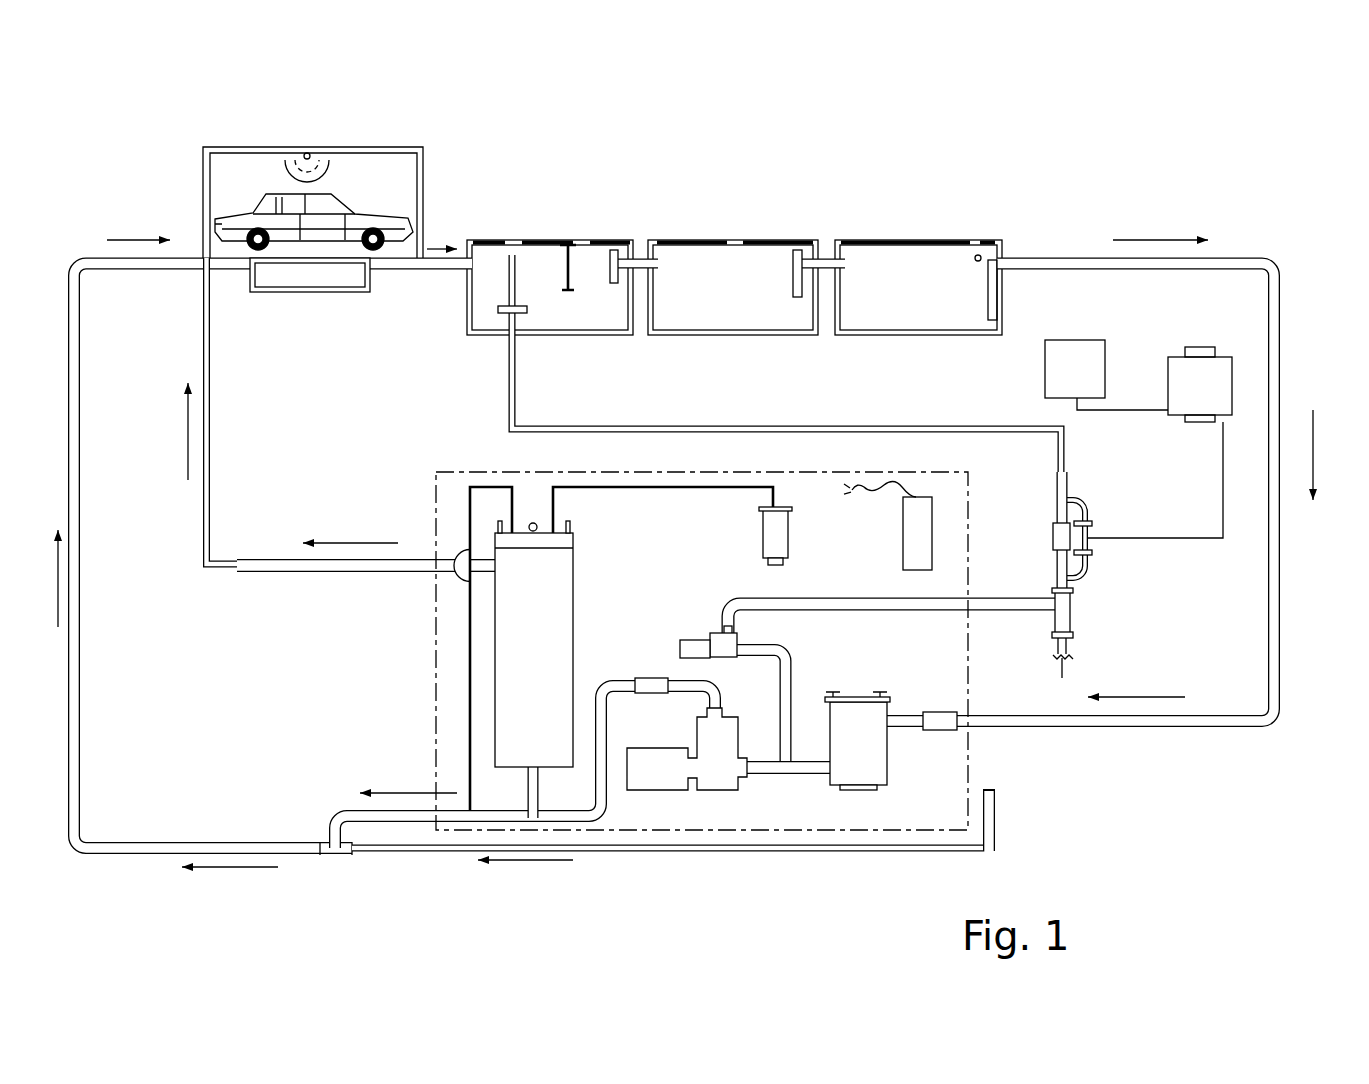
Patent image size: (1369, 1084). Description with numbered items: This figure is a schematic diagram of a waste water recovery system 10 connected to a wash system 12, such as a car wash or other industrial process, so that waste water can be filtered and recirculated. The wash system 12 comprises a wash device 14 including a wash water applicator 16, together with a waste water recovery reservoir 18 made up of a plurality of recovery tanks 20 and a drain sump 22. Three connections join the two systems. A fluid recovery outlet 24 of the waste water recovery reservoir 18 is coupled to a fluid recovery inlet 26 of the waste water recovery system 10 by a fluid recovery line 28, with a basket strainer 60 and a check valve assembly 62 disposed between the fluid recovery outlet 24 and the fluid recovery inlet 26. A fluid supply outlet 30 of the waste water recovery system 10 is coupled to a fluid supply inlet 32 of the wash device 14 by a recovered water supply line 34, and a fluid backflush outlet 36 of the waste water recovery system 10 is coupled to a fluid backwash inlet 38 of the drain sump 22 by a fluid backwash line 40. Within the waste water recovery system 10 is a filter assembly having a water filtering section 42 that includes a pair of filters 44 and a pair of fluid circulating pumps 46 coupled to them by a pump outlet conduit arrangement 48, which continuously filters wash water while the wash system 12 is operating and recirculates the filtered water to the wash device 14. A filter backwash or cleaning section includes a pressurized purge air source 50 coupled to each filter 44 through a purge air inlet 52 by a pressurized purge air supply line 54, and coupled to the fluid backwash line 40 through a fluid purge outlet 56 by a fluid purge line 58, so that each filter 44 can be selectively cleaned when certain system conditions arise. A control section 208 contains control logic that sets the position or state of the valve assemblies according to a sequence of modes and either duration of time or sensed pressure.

The waste water recovery system 10 is at (1117, 765).
The wash system 12 is at (670, 148).
The wash device 14 is at (417, 122).
The wash water applicator 16 is at (287, 167).
The waste water recovery reservoir 18 is at (845, 183).
The recovery tank 20 is at (550, 242).
The drain sump 22 is at (305, 292).
The fluid recovery outlet 24 is at (1012, 253).
The fluid recovery inlet 26 is at (770, 782).
The fluid recovery line 28 is at (1278, 560).
The fluid supply outlet 30 is at (490, 577).
The fluid supply inlet 32 is at (320, 122).
The recovered water supply line 34 is at (298, 573).
The fluid backflush outlet 36 is at (510, 808).
The fluid backwash inlet 38 is at (243, 283).
The fluid backwash line 40 is at (77, 592).
The water filtering section 42 is at (650, 583).
The filter 44 is at (590, 553).
The fluid circulating pump 46 is at (718, 768).
The pump outlet conduit arrangement 48 is at (620, 672).
The pressurized purge air source 50 is at (790, 537).
The purge air inlet 52 is at (563, 530).
The pressurized purge air supply line 54 is at (703, 485).
The fluid purge outlet 56 is at (518, 530).
The fluid purge line 58 is at (470, 694).
The basket strainer 60 is at (860, 708).
The check valve assembly 62 is at (950, 720).
The control section 208 is at (920, 510).